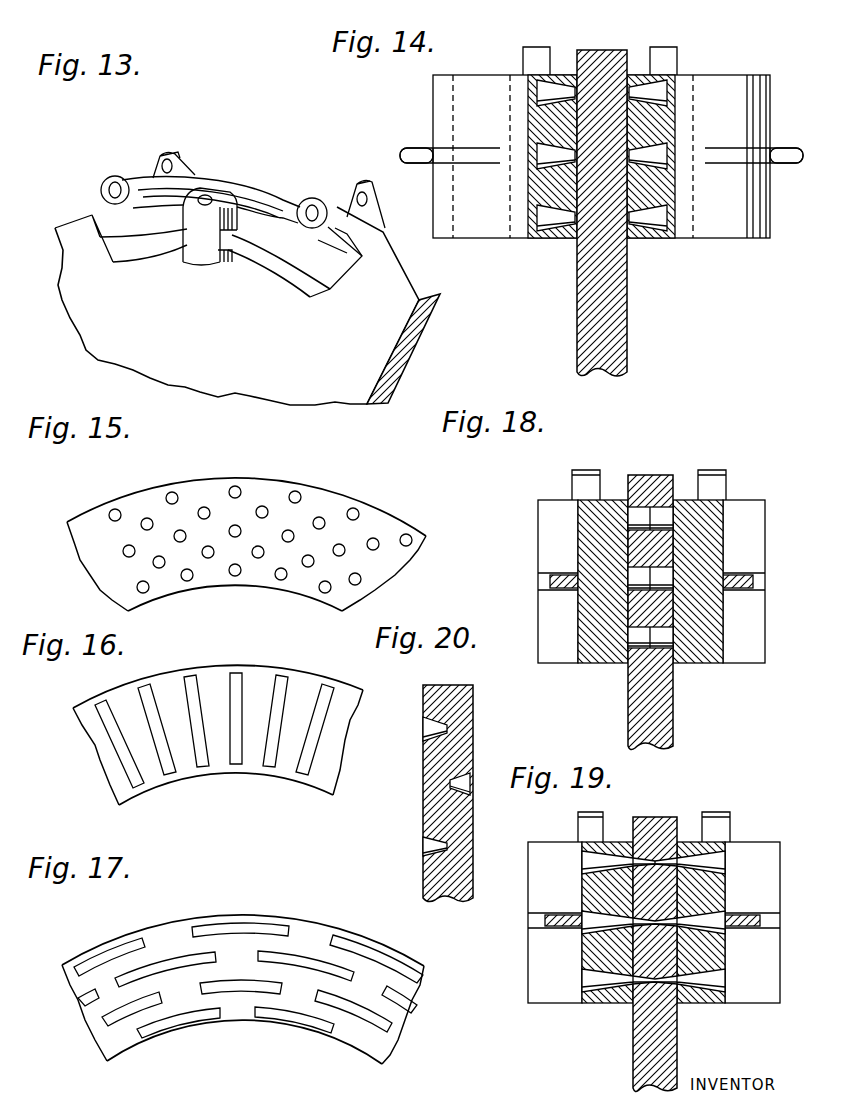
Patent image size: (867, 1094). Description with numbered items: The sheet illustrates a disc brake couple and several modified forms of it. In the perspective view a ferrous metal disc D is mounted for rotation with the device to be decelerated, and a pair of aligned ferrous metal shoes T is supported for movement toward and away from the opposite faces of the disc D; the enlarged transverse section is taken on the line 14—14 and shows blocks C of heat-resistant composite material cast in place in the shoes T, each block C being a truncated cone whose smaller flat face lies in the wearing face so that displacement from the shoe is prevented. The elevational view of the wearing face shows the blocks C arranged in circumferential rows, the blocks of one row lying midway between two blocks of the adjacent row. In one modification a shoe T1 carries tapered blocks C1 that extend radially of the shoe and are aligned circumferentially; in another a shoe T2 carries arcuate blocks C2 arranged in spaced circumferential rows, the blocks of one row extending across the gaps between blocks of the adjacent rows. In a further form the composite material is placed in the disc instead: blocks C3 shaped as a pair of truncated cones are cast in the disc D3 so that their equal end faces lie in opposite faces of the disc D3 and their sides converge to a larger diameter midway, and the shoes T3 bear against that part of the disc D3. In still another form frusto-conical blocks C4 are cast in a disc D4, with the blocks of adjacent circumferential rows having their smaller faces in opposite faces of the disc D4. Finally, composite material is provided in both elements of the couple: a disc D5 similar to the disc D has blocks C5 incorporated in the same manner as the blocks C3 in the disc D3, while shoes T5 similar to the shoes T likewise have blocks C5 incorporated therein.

In FIG. 13, the shoes T is at (140, 247).
In FIG. 14, the shoes T is at (483, 85).
In FIG. 15, the shoes T is at (260, 480).
In FIG. 13, the disc D is at (420, 328).
In FIG. 14, the disc D is at (622, 290).
In FIG. 14, the blocks C is at (640, 87).
In FIG. 15, the blocks C is at (351, 508).
In FIG. 13, the section line 14— 14 is at (238, 372).
In FIG. 16, the shoe T1 is at (203, 673).
In FIG. 16, the blocks C1 is at (278, 682).
In FIG. 17, the shoe T2 is at (298, 918).
In FIG. 17, the blocks C2 is at (165, 963).
In FIG. 18, the shoes T3 is at (773, 478).
In FIG. 18, the blocks C3 is at (700, 685).
In FIG. 18, the disc D3 is at (650, 475).
In FIG. 20, the disc D4 is at (470, 702).
In FIG. 20, the blocks C4 is at (450, 732).
In FIG. 19, the shoes T5 is at (785, 808).
In FIG. 19, the disc D5 is at (645, 817).
In FIG. 19, the blocks C5 is at (736, 958).